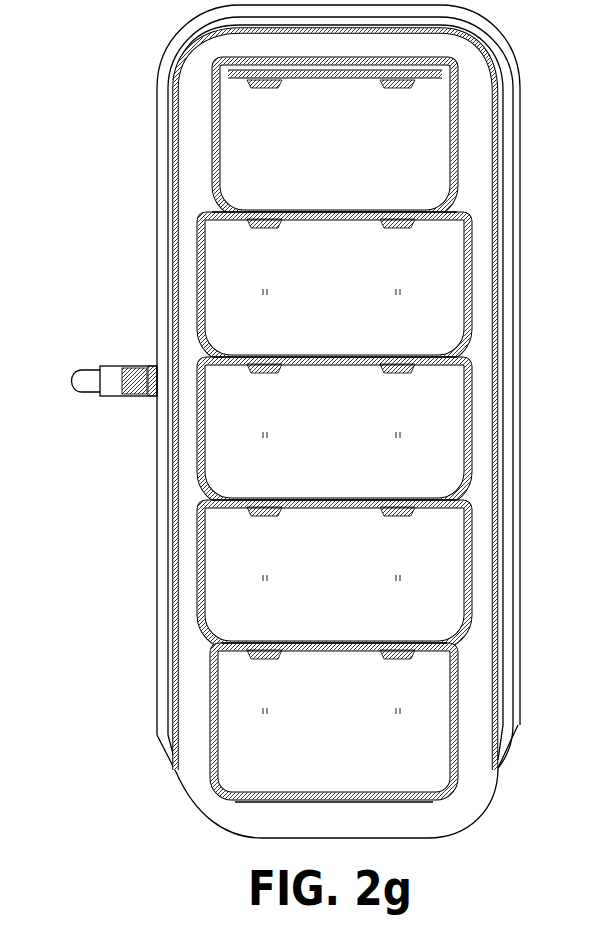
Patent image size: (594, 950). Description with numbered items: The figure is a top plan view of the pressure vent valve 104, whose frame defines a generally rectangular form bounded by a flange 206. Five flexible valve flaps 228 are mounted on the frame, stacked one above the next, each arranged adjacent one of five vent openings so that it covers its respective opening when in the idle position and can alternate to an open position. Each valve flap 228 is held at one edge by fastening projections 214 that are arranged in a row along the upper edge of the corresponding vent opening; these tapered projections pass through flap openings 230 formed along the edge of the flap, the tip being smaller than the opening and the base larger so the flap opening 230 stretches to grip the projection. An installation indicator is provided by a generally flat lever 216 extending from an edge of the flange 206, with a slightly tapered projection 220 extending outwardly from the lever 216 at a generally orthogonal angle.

The pressure vent valve 104 is at (573, 108).
The flange 206 is at (169, 740).
The fastening projections 214 is at (412, 88).
The lever 216 is at (128, 397).
The projection 220 is at (78, 394).
The valve flap 228 is at (350, 217).
The flap openings 230 is at (400, 88).